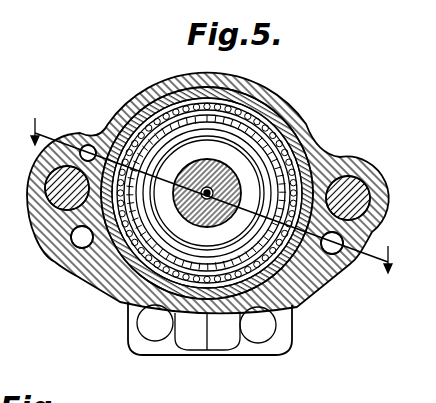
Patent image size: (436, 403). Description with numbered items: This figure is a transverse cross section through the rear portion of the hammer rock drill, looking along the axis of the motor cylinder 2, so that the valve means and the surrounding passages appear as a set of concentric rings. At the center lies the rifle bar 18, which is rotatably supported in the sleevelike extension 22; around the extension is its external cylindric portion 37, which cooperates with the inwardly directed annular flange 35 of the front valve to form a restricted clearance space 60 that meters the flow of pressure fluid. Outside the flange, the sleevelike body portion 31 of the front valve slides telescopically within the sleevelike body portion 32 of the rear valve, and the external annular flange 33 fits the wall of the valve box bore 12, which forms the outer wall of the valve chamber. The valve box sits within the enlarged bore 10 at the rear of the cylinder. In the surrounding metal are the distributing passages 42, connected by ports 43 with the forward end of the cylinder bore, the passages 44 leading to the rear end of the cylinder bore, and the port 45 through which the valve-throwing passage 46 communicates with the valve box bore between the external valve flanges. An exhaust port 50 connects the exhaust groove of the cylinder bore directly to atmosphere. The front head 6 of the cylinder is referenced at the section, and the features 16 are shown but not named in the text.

The motor cylinder 2 is at (237, 85).
The front head 6 is at (202, 206).
The enlarged bore 10 is at (166, 90).
The valve box bore 12 is at (263, 158).
The bolt holes 16 is at (348, 178).
The rifle bar 18 is at (155, 323).
The sleevelike extension 22 is at (258, 325).
The sleevelike body portion 31 is at (290, 165).
The sleevelike body portion 32 is at (285, 150).
The external annular flange 33 is at (183, 105).
The inwardly directed annular flange 35 is at (112, 292).
The external cylindric portion 37 is at (232, 150).
The distributing passages 42 is at (80, 243).
The ports 43 is at (100, 266).
The passages 44 is at (297, 312).
The port 45 is at (100, 136).
The valve-throwing passage 46 is at (86, 145).
The exhaust port 50 is at (206, 345).
The restricted clearance space 60 is at (124, 303).